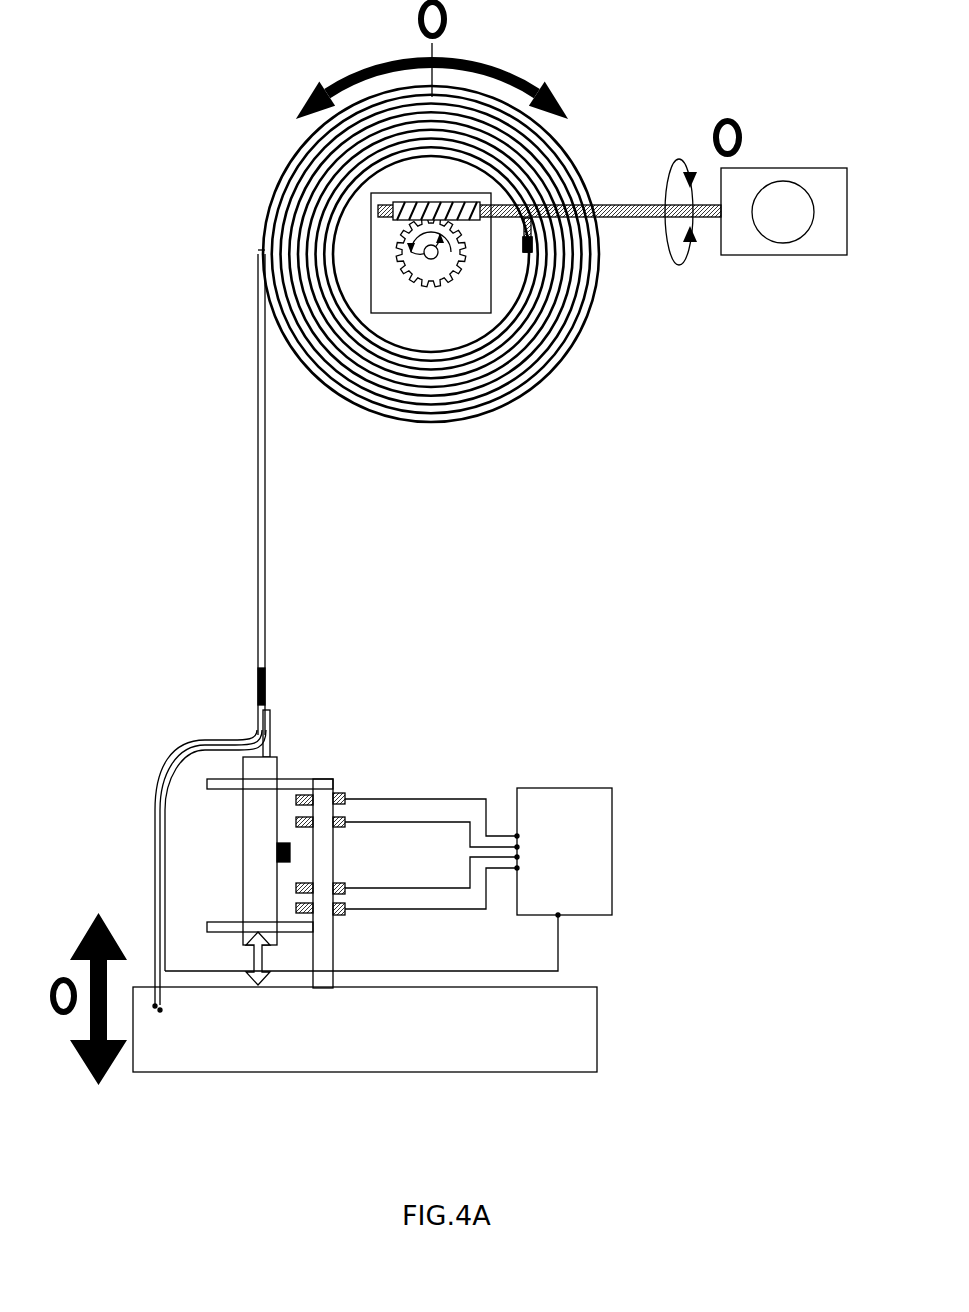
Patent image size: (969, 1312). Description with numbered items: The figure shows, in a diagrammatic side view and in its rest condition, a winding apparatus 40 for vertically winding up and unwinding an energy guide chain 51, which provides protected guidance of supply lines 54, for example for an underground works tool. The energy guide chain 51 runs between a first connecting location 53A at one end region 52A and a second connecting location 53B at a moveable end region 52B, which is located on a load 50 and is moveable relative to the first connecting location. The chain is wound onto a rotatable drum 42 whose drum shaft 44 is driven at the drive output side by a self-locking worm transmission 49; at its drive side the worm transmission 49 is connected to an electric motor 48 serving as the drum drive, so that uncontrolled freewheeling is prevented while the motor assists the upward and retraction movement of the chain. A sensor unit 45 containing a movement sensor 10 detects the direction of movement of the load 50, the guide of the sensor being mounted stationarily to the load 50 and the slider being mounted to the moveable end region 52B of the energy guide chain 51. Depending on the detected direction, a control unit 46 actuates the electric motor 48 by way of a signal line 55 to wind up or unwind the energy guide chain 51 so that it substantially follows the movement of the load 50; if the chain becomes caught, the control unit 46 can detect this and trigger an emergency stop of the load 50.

The movement sensor 10 is at (297, 747).
The winding apparatus 40 is at (140, 80).
The drum 42 is at (527, 352).
The drum shaft 44 is at (437, 252).
The sensor unit 45 is at (443, 702).
The control unit 46 is at (585, 820).
The electric motor 48 is at (829, 230).
The worm transmission 49 is at (397, 230).
The load 50 is at (572, 1030).
The energy guide chain 51 is at (262, 460).
The end region 52A is at (560, 197).
The first connecting location 53A is at (560, 197).
The moveable end region 52B is at (246, 689).
The second connecting location 53B is at (158, 1024).
The supply lines 54 is at (165, 782).
The signal line 55 is at (558, 935).